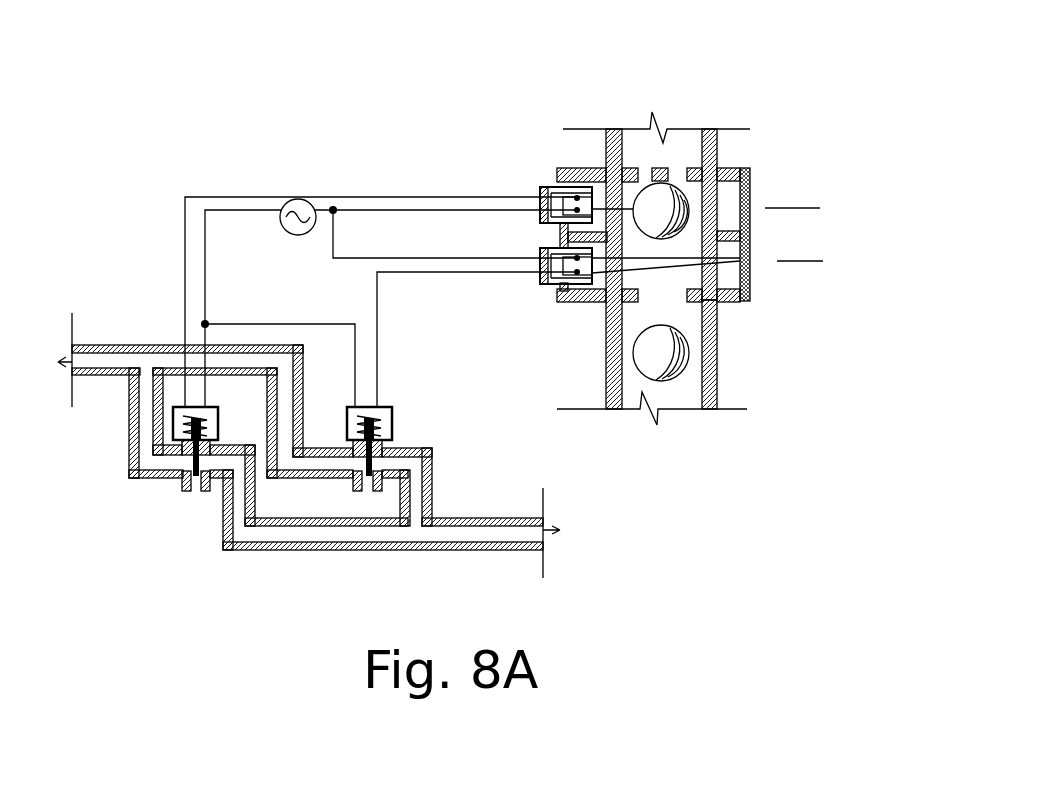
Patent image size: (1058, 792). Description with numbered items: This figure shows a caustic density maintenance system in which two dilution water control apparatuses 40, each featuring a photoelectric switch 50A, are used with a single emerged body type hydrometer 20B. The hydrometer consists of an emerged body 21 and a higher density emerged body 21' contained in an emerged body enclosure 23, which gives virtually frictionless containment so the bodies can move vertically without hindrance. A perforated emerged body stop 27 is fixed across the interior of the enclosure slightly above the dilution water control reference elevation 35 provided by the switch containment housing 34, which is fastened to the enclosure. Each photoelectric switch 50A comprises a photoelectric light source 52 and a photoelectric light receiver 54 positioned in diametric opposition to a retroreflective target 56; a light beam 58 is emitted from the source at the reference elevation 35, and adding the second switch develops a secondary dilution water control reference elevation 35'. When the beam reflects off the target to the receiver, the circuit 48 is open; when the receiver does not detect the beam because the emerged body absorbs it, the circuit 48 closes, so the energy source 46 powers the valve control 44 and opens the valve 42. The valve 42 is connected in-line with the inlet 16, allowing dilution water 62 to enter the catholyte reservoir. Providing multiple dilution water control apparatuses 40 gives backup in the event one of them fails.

The inlet 16 is at (477, 550).
The emerged body type hydrometer 20B is at (678, 397).
The emerged body 21 is at (756, 173).
The higher density emerged body 21' is at (728, 356).
The emerged body enclosure 23 is at (717, 390).
The emerged body stop 27 is at (650, 168).
The switch containment housing 34 is at (580, 168).
The dilution water control reference elevation 35 is at (736, 209).
The secondary dilution water control reference elevation 35' is at (740, 264).
The dilution water control apparatus 40 is at (348, 317).
The valve 42 is at (187, 490).
The valve control 44 is at (380, 417).
The energy source 46 is at (290, 228).
The circuit 48 is at (183, 238).
The photoelectric switch 50A is at (530, 185).
The photoelectric light source 52 is at (548, 250).
The photoelectric light receiver 54 is at (573, 302).
The retroreflective target 56 is at (750, 194).
The light beam 58 is at (717, 332).
The dilution water 62 is at (130, 390).